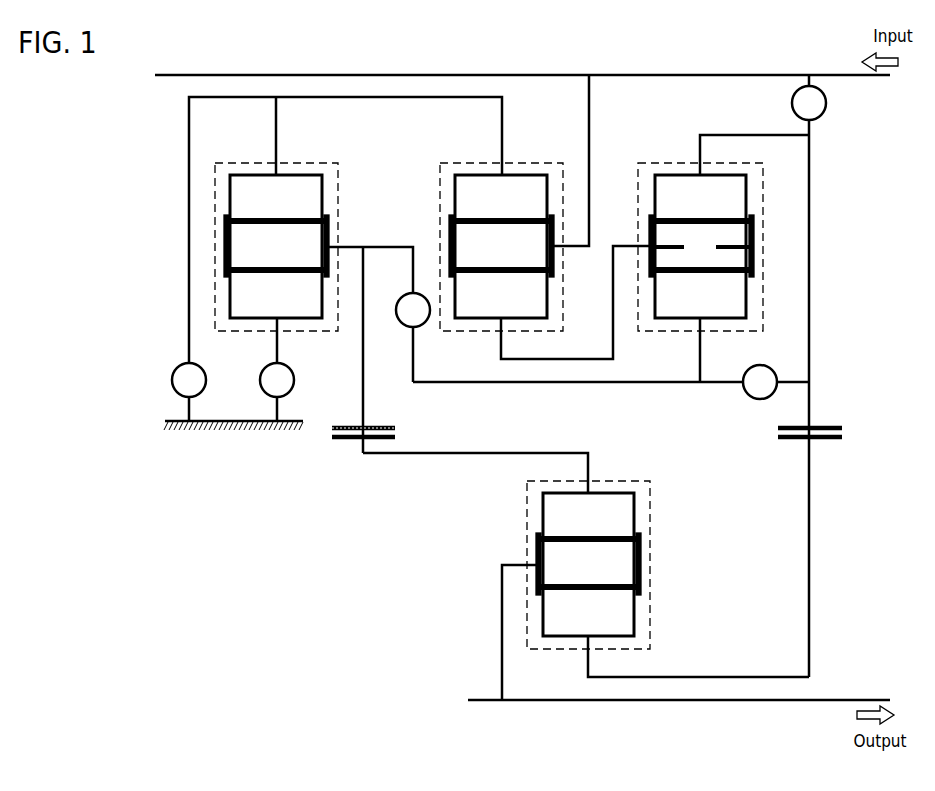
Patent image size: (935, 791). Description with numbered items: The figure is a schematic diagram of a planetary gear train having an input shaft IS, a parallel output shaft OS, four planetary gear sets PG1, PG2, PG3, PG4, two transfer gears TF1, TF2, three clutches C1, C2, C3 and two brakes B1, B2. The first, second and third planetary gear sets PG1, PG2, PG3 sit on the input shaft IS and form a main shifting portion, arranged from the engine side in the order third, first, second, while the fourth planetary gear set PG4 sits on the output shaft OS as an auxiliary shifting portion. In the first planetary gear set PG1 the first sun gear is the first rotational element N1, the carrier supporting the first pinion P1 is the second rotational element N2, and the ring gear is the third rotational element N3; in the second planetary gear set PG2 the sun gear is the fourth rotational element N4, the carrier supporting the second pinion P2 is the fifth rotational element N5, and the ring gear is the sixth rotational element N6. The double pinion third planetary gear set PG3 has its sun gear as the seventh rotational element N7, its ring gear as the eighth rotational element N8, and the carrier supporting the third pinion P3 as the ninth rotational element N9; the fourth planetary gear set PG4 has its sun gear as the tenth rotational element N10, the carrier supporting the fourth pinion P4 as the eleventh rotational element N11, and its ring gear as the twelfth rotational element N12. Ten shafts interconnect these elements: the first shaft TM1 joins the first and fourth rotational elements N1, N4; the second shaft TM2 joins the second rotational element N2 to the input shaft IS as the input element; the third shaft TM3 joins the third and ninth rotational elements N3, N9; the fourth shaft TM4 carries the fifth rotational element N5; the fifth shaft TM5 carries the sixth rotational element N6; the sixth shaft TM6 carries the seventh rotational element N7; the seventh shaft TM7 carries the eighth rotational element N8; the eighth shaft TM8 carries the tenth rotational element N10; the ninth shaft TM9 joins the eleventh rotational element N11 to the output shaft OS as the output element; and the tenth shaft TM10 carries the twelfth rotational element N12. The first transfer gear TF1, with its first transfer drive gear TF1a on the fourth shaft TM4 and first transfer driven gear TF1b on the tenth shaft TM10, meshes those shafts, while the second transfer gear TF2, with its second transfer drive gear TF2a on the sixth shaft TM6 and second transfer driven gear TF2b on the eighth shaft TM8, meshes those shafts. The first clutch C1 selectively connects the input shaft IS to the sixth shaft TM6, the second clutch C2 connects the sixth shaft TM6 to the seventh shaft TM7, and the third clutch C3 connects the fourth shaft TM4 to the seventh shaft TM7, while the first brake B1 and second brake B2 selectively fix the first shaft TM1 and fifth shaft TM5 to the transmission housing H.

The input shaft IS is at (831, 75).
The output shaft OS is at (817, 700).
The first planetary gear set PG1 is at (525, 177).
The second planetary gear set PG2 is at (303, 177).
The third planetary gear set PG3 is at (723, 177).
The fourth planetary gear set PG4 is at (628, 620).
The first rotational element N1 is at (501, 198).
The second rotational element N2 is at (554, 262).
The third rotational element N3 is at (501, 294).
The fourth rotational element N4 is at (276, 198).
The fifth rotational element N5 is at (308, 228).
The sixth rotational element N6 is at (276, 294).
The seventh rotational element N7 is at (700, 198).
The eighth rotational element N8 is at (700, 294).
The ninth rotational element N9 is at (754, 262).
The tenth rotational element N10 is at (588, 611).
The eleventh rotational element N11 is at (641, 582).
The twelfth rotational element N12 is at (588, 516).
The first pinion P1 is at (501, 245).
The second pinion P2 is at (276, 245).
The third pinion P3 is at (702, 245).
The fourth pinion P4 is at (588, 563).
The first shaft TM1 is at (366, 97).
The second shaft TM2 is at (589, 100).
The third shaft TM3 is at (583, 359).
The fourth shaft TM4 is at (380, 247).
The fifth shaft TM5 is at (277, 345).
The sixth shaft TM6 is at (755, 135).
The seventh shaft TM7 is at (647, 382).
The eighth shaft TM8 is at (744, 677).
The ninth shaft TM9 is at (510, 565).
The tenth shaft TM10 is at (526, 453).
The first brake B1 is at (189, 392).
The second brake B2 is at (277, 392).
The first clutch C1 is at (809, 103).
The second clutch C2 is at (760, 382).
The third clutch C3 is at (413, 310).
The first transfer gear TF1 is at (412, 424).
The first transfer drive gear TF1a is at (395, 428).
The first transfer driven gear TF1b is at (393, 435).
The second transfer gear TF2 is at (763, 436).
The second transfer drive gear TF2a is at (778, 428).
The second transfer driven gear TF2b is at (783, 447).
The transmission housing H is at (255, 426).